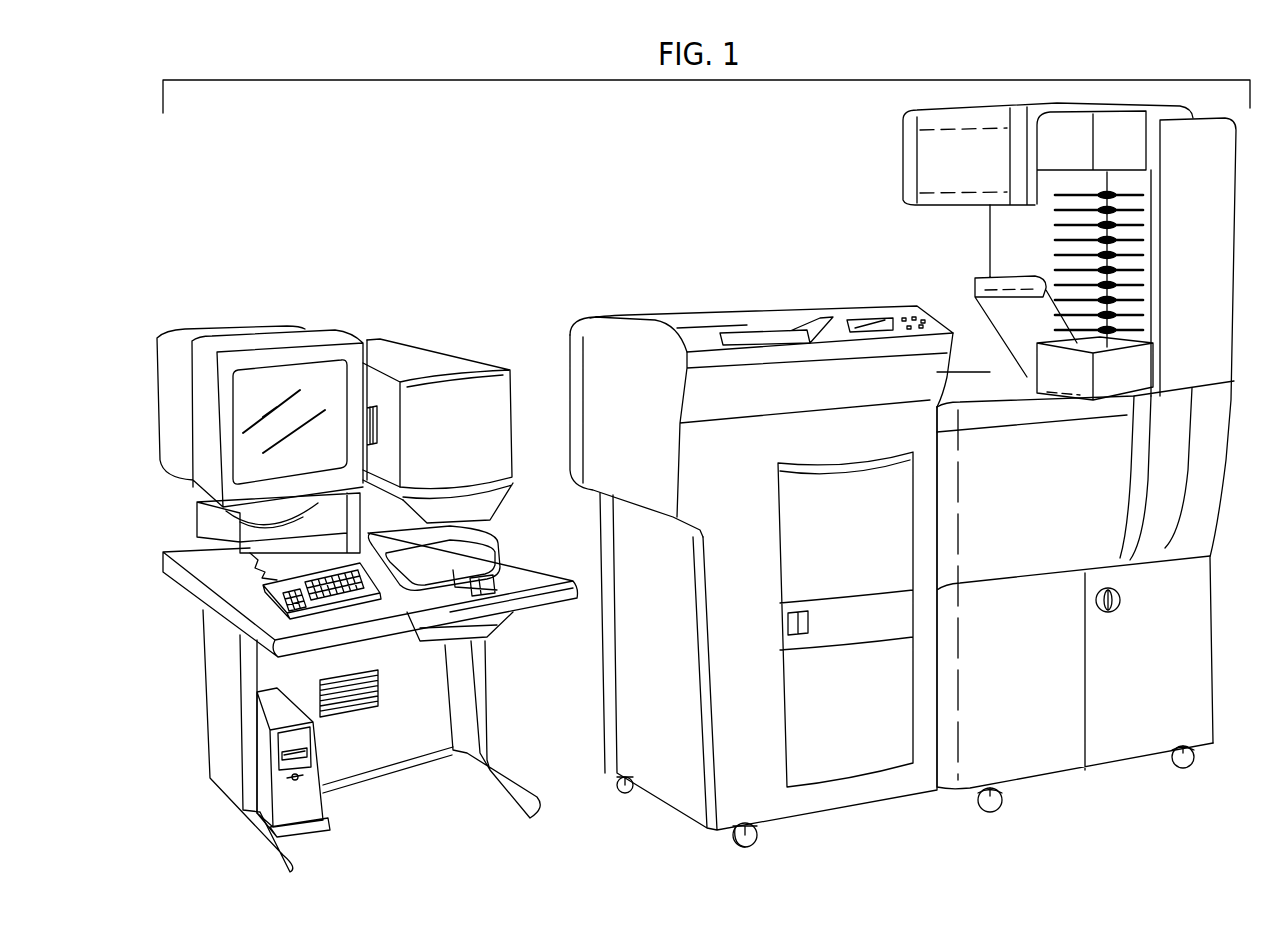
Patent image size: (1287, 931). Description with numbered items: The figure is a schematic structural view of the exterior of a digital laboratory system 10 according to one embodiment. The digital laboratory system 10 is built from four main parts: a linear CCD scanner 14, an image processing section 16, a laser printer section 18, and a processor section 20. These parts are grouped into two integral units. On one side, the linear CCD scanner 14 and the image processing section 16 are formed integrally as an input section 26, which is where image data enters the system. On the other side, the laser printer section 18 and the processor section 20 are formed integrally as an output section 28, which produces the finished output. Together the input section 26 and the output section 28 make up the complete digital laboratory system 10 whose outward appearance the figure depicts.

The digital laboratory system 10 is at (458, 188).
The linear CCD scanner 14 is at (486, 345).
The image processing section 16 is at (340, 799).
The laser printer section 18 is at (761, 521).
The processor section 20 is at (880, 265).
The input section 26 is at (322, 312).
The output section 28 is at (728, 262).